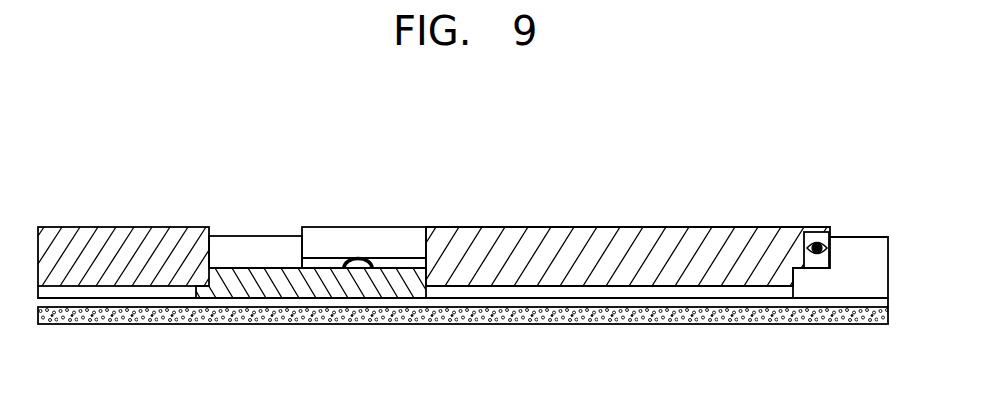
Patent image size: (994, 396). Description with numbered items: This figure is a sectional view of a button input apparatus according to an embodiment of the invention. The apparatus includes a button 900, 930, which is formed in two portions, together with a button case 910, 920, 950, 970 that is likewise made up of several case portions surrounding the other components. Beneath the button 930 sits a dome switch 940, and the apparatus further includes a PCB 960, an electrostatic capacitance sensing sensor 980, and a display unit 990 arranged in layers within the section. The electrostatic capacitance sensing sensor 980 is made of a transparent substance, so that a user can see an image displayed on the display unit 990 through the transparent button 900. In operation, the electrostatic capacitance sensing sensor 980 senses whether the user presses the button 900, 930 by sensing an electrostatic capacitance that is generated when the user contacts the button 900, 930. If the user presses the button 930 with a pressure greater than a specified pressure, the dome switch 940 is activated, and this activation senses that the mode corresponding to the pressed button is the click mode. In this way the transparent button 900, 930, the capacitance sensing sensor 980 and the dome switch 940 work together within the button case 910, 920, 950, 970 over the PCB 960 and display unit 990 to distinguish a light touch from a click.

The button 900 is at (623, 240).
The button case 910 is at (853, 248).
The button case 920 is at (255, 248).
The button 930 is at (413, 235).
The dome switch 940 is at (360, 257).
The button case 950 is at (853, 280).
The PCB 960 is at (325, 290).
The button case 970 is at (128, 236).
The electrostatic capacitance sensing sensor 980 is at (535, 302).
The display unit 990 is at (427, 298).